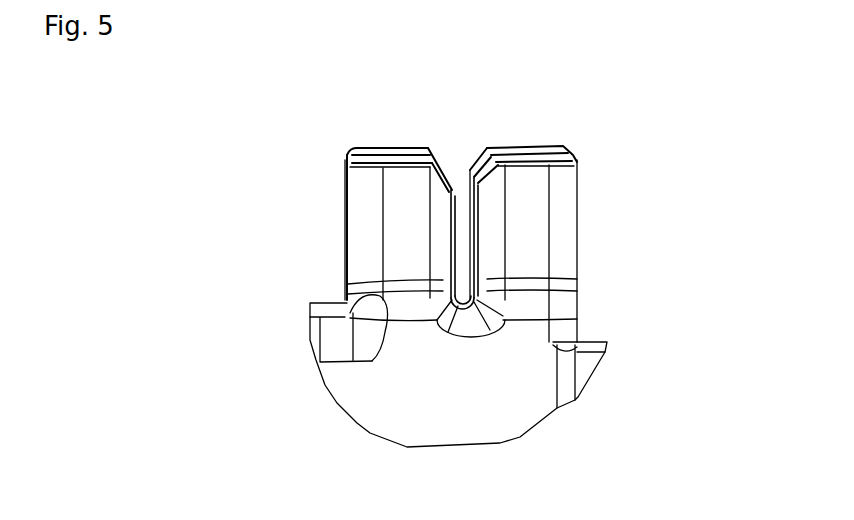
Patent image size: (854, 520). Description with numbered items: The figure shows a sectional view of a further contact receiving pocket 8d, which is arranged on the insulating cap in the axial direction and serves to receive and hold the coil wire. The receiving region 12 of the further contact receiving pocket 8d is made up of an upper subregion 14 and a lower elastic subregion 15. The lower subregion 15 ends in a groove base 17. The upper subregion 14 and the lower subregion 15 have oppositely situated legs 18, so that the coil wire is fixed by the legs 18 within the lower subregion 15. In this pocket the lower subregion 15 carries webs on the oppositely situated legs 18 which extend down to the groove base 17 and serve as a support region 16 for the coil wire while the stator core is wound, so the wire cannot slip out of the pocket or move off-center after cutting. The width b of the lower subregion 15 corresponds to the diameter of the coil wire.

The further contact receiving pocket 8d is at (272, 105).
The receiving region 12 is at (460, 202).
The upper subregion 14 is at (420, 203).
The lower elastic subregion 15 is at (413, 245).
The support region 16 is at (477, 232).
The groove base 17 is at (462, 293).
The legs 18 is at (438, 185).
The width of the lower subregion b is at (442, 293).